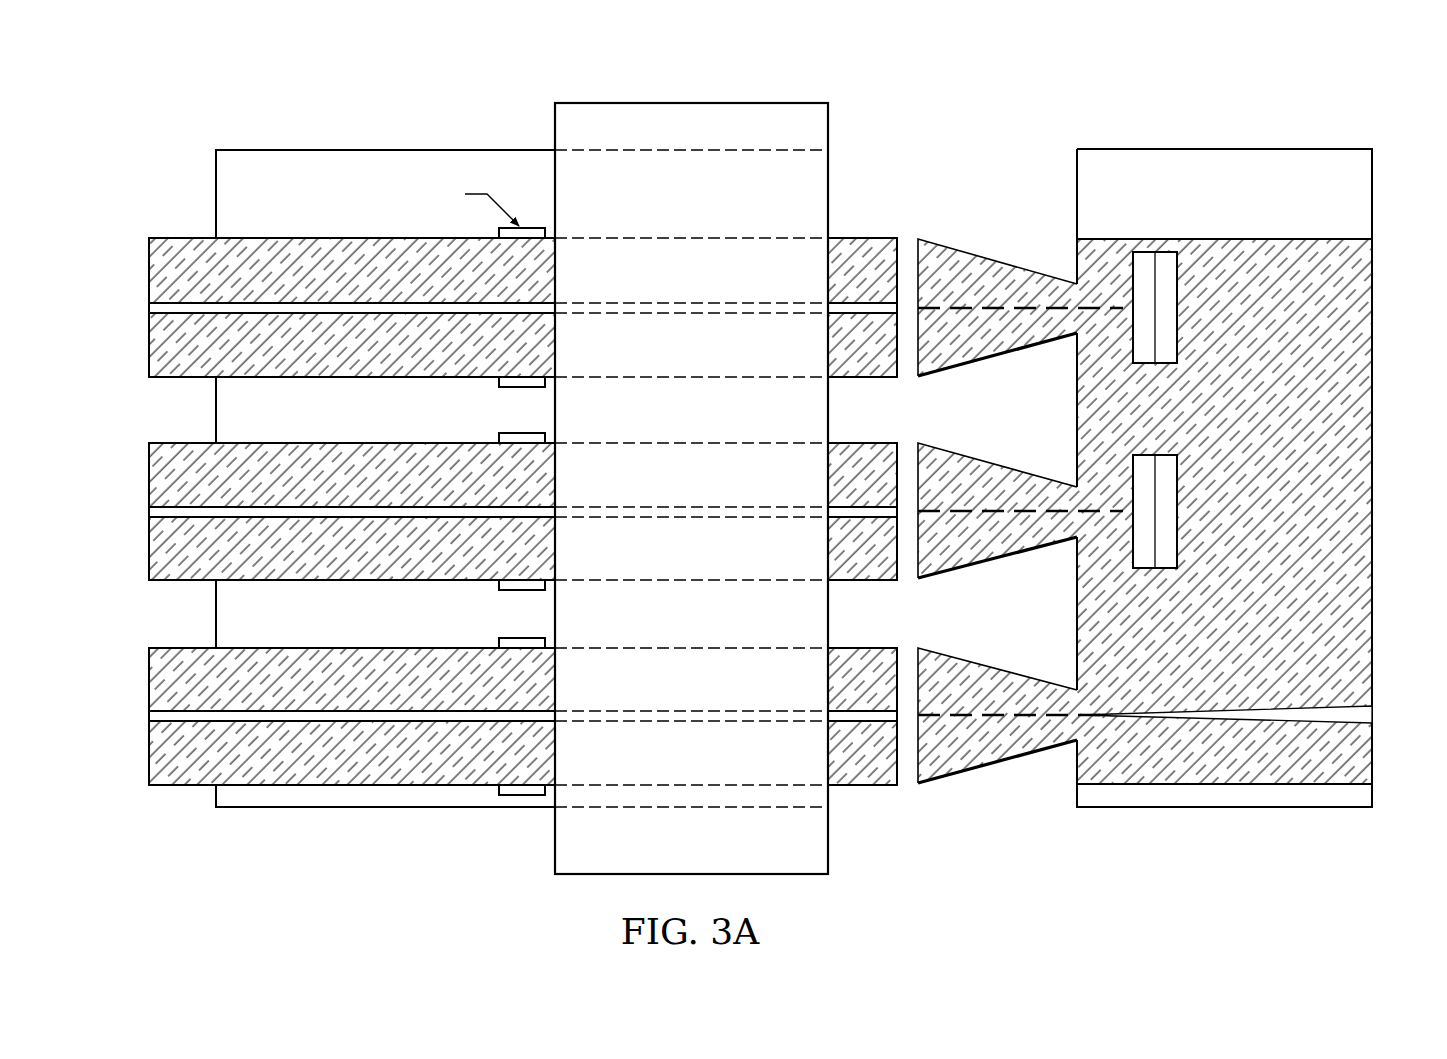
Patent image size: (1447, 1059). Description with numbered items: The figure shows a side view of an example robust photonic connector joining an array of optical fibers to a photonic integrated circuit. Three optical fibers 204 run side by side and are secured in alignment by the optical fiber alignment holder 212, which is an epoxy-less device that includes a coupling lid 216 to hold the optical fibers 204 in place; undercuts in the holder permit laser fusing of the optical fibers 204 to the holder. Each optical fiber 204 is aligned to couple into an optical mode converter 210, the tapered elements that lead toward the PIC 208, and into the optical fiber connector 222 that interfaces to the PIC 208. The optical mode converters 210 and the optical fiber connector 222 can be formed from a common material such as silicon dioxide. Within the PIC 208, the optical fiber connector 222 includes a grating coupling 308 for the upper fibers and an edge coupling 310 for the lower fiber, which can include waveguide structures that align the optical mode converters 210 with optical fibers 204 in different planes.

The optical fibers 204 is at (148, 483).
The PIC 208 is at (1203, 224).
The optical mode converters 210 is at (1002, 263).
The optical fiber alignment holder 212 is at (216, 192).
The coupling lid 216 is at (691, 103).
The optical fiber connector 222 is at (1085, 768).
The grating coupling 308 is at (1170, 568).
The edge coupling 310 is at (1363, 717).